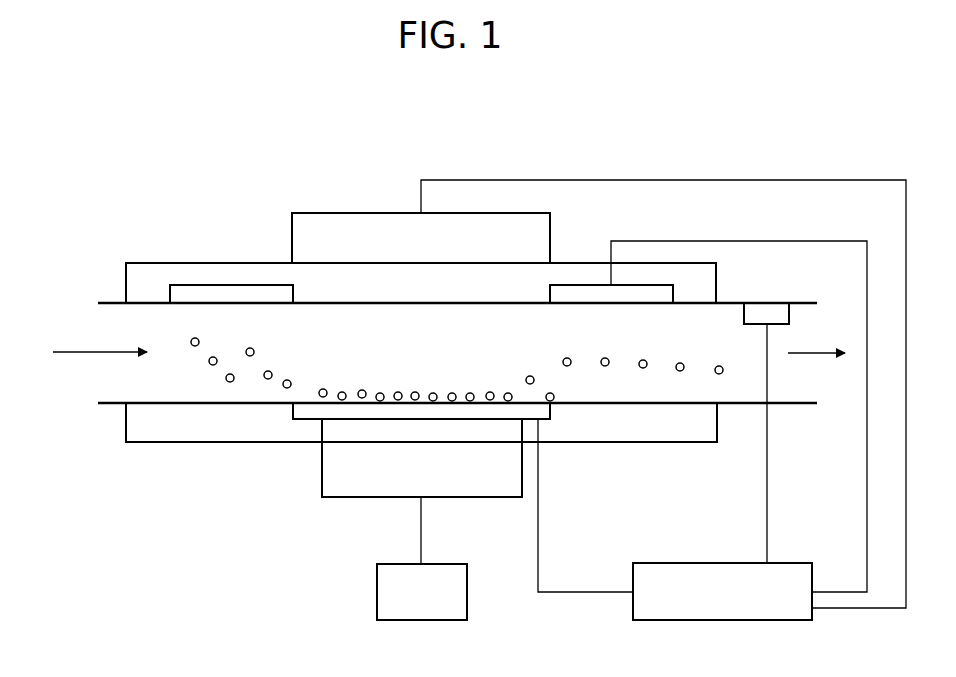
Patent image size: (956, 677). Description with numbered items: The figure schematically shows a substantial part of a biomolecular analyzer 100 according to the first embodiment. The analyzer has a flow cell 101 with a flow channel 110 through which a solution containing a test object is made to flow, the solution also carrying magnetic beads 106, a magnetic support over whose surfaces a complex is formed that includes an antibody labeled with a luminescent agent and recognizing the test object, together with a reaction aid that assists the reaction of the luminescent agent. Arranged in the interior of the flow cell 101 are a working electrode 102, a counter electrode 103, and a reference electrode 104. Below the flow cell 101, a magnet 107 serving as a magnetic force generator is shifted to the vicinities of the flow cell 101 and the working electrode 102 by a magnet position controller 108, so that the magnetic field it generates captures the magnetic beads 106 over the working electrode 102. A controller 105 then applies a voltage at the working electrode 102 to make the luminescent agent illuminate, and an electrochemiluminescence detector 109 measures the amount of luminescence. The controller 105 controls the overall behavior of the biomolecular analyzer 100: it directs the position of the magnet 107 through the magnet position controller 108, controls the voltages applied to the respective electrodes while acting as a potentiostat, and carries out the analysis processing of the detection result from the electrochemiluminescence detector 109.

The biomolecular analyzer 100 is at (540, 152).
The flow cell 101 is at (157, 268).
The working electrode 102 is at (305, 413).
The counter electrode 103 is at (215, 292).
The reference electrode 104 is at (774, 313).
The controller 105 is at (672, 573).
The magnetic beads 106 is at (230, 383).
The magnet 107 is at (340, 488).
The magnet position controller 108 is at (380, 603).
The electrochemiluminescence detector 109 is at (350, 218).
The flow channel 110 is at (107, 330).